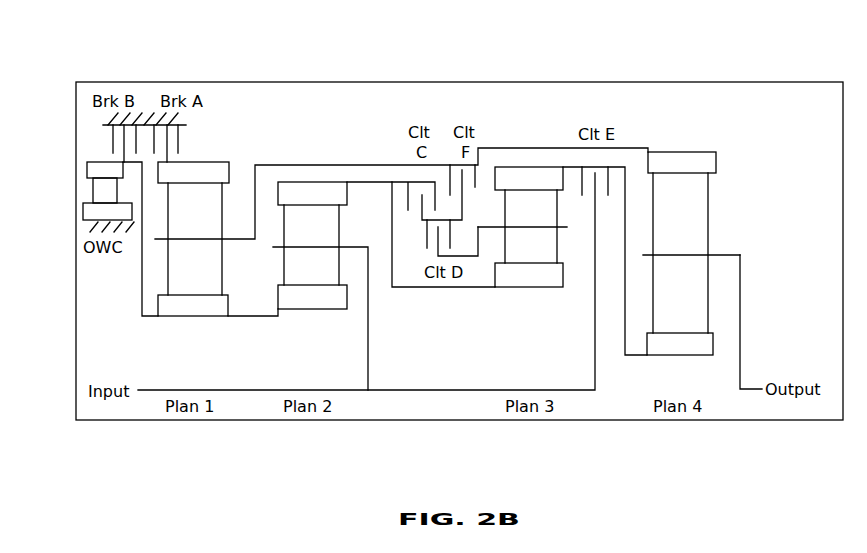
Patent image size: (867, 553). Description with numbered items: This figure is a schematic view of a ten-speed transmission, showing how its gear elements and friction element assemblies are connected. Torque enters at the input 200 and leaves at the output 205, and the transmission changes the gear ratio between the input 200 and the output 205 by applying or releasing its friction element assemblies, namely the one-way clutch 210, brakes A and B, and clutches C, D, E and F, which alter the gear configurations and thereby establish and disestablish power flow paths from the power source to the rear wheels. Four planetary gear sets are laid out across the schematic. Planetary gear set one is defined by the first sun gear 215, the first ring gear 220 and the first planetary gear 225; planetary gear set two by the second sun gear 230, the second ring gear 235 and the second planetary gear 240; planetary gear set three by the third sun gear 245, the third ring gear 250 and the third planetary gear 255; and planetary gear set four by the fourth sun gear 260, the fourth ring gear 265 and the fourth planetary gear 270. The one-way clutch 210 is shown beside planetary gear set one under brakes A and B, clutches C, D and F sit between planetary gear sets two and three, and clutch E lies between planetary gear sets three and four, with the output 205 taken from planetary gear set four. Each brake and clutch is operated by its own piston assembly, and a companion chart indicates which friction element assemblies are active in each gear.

The input 200 is at (153, 393).
The output 205 is at (750, 388).
The one-way clutch 210 is at (88, 192).
The first sun gear 215 is at (188, 305).
The first ring gear 220 is at (204, 174).
The first planetary gear 225 is at (192, 239).
The second sun gear 230 is at (308, 302).
The second ring gear 235 is at (313, 188).
The second planetary gear 240 is at (322, 246).
The third sun gear 245 is at (526, 272).
The third ring gear 250 is at (528, 183).
The third planetary gear 255 is at (540, 229).
The fourth sun gear 260 is at (678, 345).
The fourth ring gear 265 is at (680, 165).
The fourth planetary gear 270 is at (676, 254).